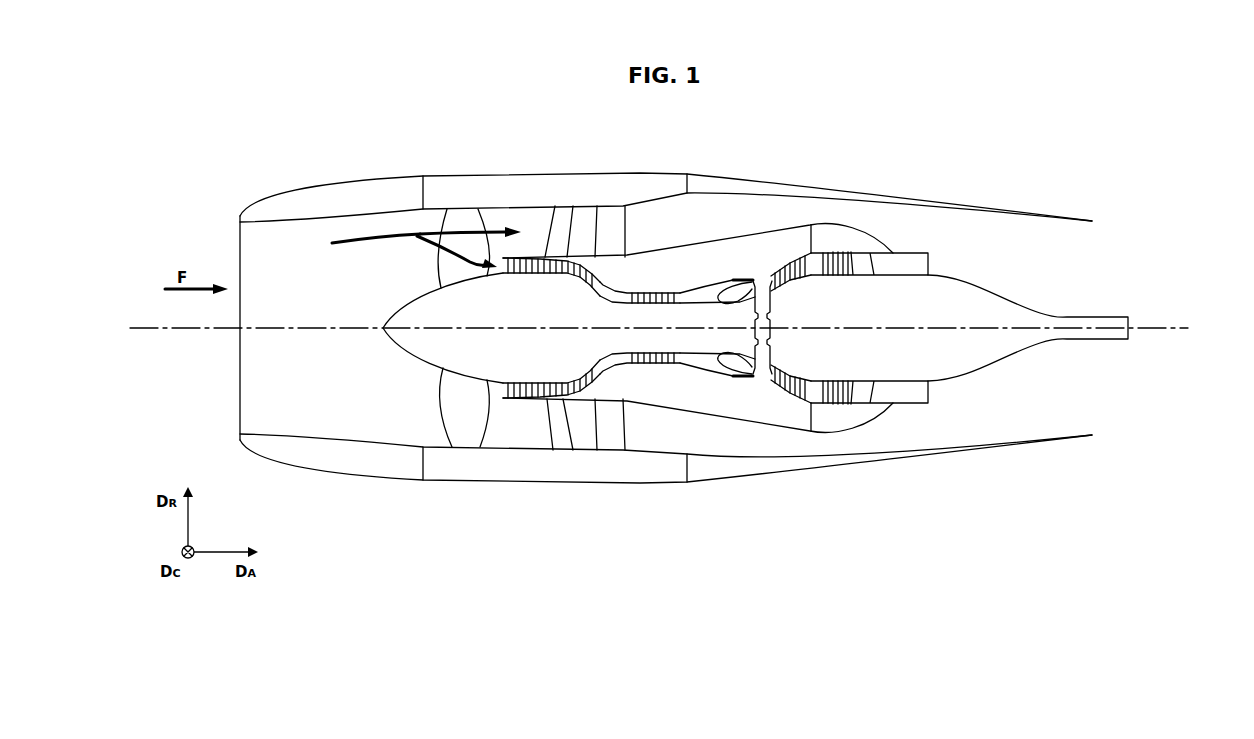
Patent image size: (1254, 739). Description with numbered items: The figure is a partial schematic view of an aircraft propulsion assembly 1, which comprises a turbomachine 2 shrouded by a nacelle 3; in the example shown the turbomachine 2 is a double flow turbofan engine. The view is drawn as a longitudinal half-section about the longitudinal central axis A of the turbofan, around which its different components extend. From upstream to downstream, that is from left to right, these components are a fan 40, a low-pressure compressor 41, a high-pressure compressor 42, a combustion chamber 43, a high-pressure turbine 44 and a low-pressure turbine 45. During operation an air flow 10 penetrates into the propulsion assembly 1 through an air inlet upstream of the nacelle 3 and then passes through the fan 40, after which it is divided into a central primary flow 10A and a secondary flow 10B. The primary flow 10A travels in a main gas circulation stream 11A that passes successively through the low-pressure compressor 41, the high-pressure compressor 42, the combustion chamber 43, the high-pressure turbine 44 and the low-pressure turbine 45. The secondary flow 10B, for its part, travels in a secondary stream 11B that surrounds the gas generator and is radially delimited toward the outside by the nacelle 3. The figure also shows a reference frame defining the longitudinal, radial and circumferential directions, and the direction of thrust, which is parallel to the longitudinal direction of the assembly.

The aircraft propulsion assembly 1 is at (778, 547).
The turbomachine 2 is at (942, 265).
The nacelle 3 is at (587, 189).
The air flow 10 is at (367, 243).
The primary flow 10A is at (466, 231).
The secondary flow 10B is at (447, 273).
The main gas circulation stream 11A is at (613, 363).
The secondary stream 11B is at (766, 451).
The fan 40 is at (476, 411).
The low-pressure compressor 41 is at (572, 257).
The high-pressure compressor 42 is at (658, 286).
The combustion chamber 43 is at (729, 272).
The high-pressure turbine 44 is at (764, 280).
The low-pressure turbine 45 is at (821, 244).
The longitudinal central axis A is at (1182, 327).